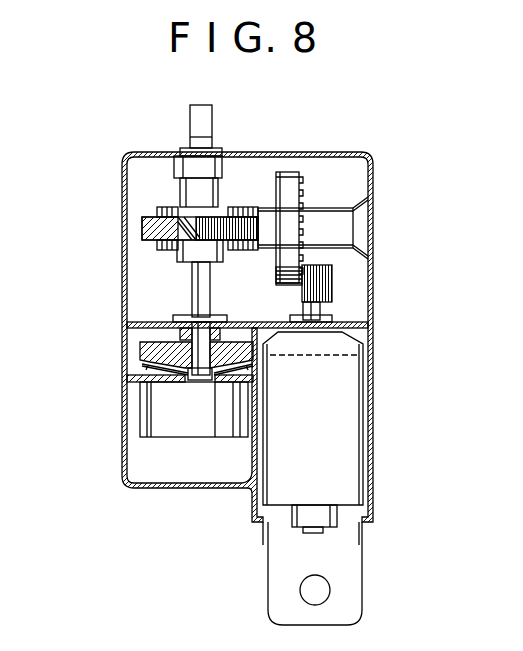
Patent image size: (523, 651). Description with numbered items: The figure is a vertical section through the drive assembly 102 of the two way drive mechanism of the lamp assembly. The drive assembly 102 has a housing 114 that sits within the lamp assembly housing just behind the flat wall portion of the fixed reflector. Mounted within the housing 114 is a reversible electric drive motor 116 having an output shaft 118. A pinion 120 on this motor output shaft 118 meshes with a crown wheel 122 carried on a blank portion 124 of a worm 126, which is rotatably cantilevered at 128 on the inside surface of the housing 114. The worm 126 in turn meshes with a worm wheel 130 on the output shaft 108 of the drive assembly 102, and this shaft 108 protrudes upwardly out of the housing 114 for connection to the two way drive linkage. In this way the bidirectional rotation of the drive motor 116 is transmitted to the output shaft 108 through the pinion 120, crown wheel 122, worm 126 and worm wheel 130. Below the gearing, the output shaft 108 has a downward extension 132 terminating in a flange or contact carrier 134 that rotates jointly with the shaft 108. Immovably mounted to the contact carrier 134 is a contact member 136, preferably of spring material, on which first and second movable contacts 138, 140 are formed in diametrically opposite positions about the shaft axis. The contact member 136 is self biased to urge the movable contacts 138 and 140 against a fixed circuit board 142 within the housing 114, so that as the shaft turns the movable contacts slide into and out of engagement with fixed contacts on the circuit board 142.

The drive assembly 102 is at (136, 136).
The output shaft 108 is at (205, 112).
The housing 114 is at (373, 170).
The reversible electric drive motor 116 is at (358, 455).
The output shaft 118 is at (322, 316).
The pinion 120 is at (336, 283).
The crown wheel 122 is at (287, 172).
The blank portion 124 is at (328, 222).
The worm 126 is at (163, 205).
The cantilever mounting 128 is at (362, 218).
The worm wheel 130 is at (148, 222).
The downward extension 132 is at (196, 293).
The contact carrier 134 is at (142, 350).
The contact member 136 is at (164, 398).
The first movable contact 138 is at (135, 378).
The second movable contact 140 is at (255, 372).
The fixed circuit board 142 is at (252, 382).